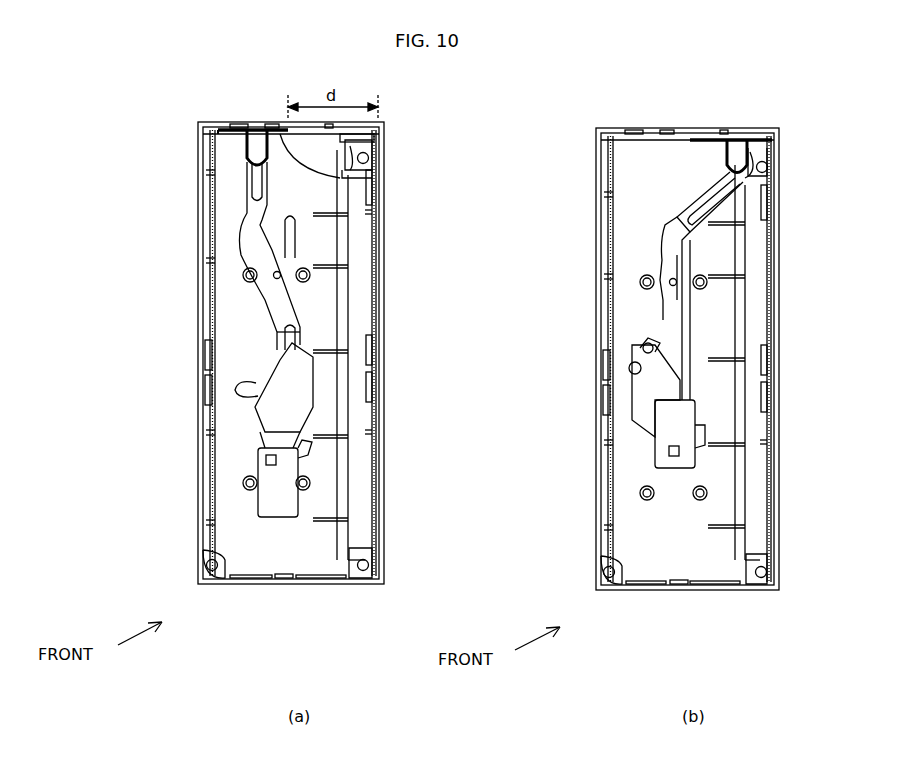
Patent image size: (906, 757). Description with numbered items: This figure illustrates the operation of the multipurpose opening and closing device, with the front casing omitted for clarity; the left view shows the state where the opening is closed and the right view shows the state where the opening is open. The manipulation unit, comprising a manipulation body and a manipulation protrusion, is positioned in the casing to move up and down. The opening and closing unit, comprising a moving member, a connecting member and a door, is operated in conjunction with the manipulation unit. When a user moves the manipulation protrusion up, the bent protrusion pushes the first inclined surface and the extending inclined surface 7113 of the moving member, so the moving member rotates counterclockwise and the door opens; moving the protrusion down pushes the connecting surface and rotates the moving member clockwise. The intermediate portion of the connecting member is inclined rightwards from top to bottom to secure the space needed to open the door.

The extending inclined surface 7113 is at (310, 415).